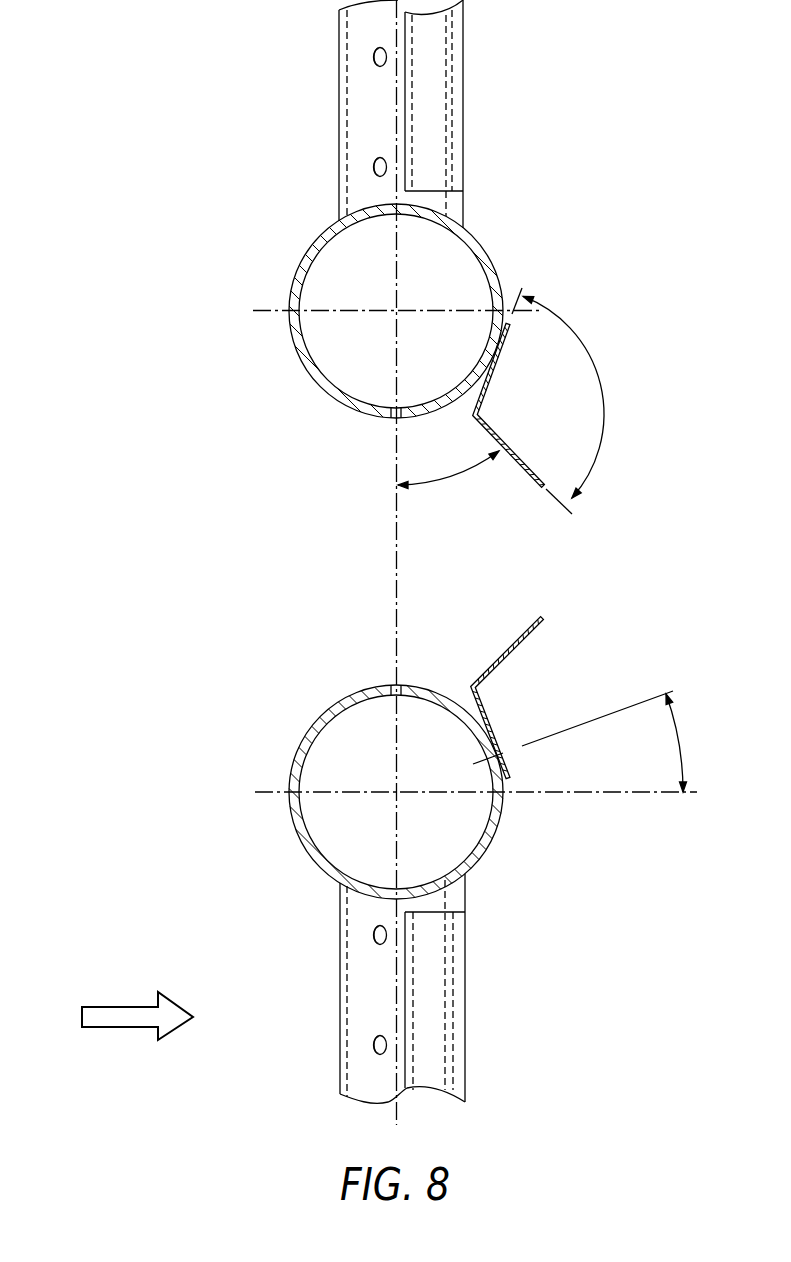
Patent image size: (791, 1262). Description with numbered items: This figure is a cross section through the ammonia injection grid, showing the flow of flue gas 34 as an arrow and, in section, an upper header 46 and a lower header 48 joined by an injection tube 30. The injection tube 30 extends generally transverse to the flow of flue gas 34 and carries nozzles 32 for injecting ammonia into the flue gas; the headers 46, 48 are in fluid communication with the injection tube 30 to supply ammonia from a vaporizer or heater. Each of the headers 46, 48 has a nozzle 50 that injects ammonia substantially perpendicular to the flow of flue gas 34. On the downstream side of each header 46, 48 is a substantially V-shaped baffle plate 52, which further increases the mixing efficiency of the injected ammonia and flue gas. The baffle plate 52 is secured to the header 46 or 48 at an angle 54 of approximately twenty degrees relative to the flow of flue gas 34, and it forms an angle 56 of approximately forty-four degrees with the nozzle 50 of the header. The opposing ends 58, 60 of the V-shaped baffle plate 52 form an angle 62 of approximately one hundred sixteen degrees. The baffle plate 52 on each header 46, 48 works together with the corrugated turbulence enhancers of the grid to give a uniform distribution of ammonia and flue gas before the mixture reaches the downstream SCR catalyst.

The injection tube 30 is at (355, 35).
The nozzle 32 is at (372, 62).
The flow of flue gas 34 is at (113, 1015).
The upper header 46 is at (300, 263).
The lower header 48 is at (297, 843).
The nozzle 50 is at (392, 417).
The substantially V-shaped baffle plate 52 is at (500, 450).
The angle 54 is at (593, 741).
The angle 56 is at (448, 468).
The end of baffle plate 58 is at (507, 328).
The end of baffle plate 60 is at (543, 475).
The angle 62 is at (579, 397).